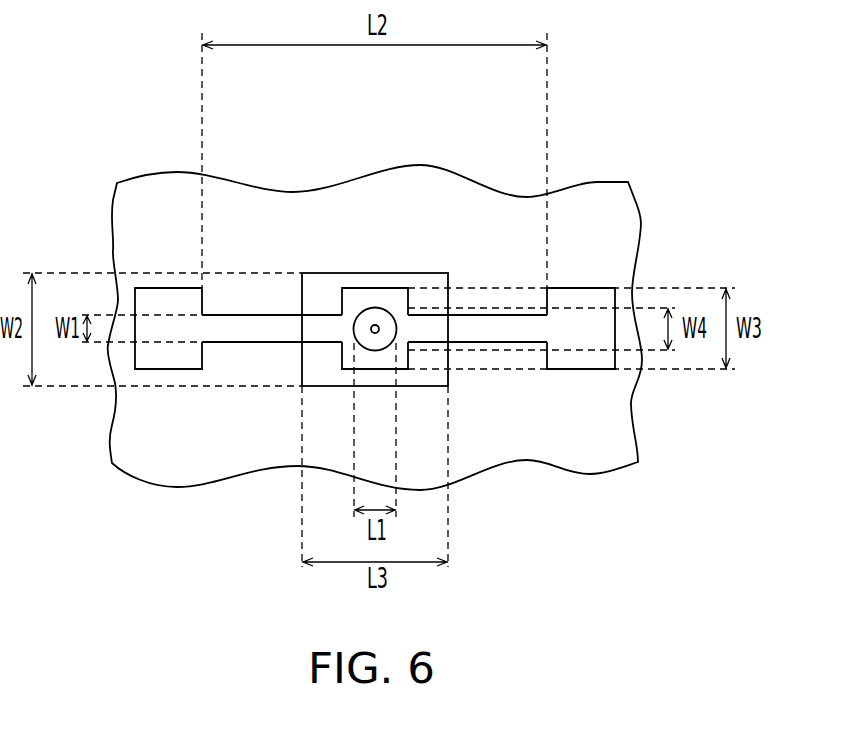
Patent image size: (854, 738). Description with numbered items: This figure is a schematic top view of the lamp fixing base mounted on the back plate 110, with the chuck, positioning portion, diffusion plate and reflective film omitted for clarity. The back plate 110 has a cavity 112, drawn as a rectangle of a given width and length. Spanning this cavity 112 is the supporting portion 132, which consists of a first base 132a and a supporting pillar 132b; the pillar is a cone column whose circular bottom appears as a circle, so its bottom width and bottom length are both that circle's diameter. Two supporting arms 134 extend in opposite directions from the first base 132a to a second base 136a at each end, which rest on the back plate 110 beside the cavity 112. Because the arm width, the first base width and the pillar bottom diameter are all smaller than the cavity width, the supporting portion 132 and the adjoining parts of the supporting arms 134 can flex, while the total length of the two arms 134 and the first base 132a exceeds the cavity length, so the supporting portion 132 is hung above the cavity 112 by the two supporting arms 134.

The back plate 110 is at (622, 243).
The cavity 112 is at (433, 278).
The supporting portion 132 is at (378, 218).
The first base 132a is at (355, 300).
The supporting pillar 132b is at (377, 316).
The supporting arms 134 is at (258, 327).
The second base 136a is at (166, 300).